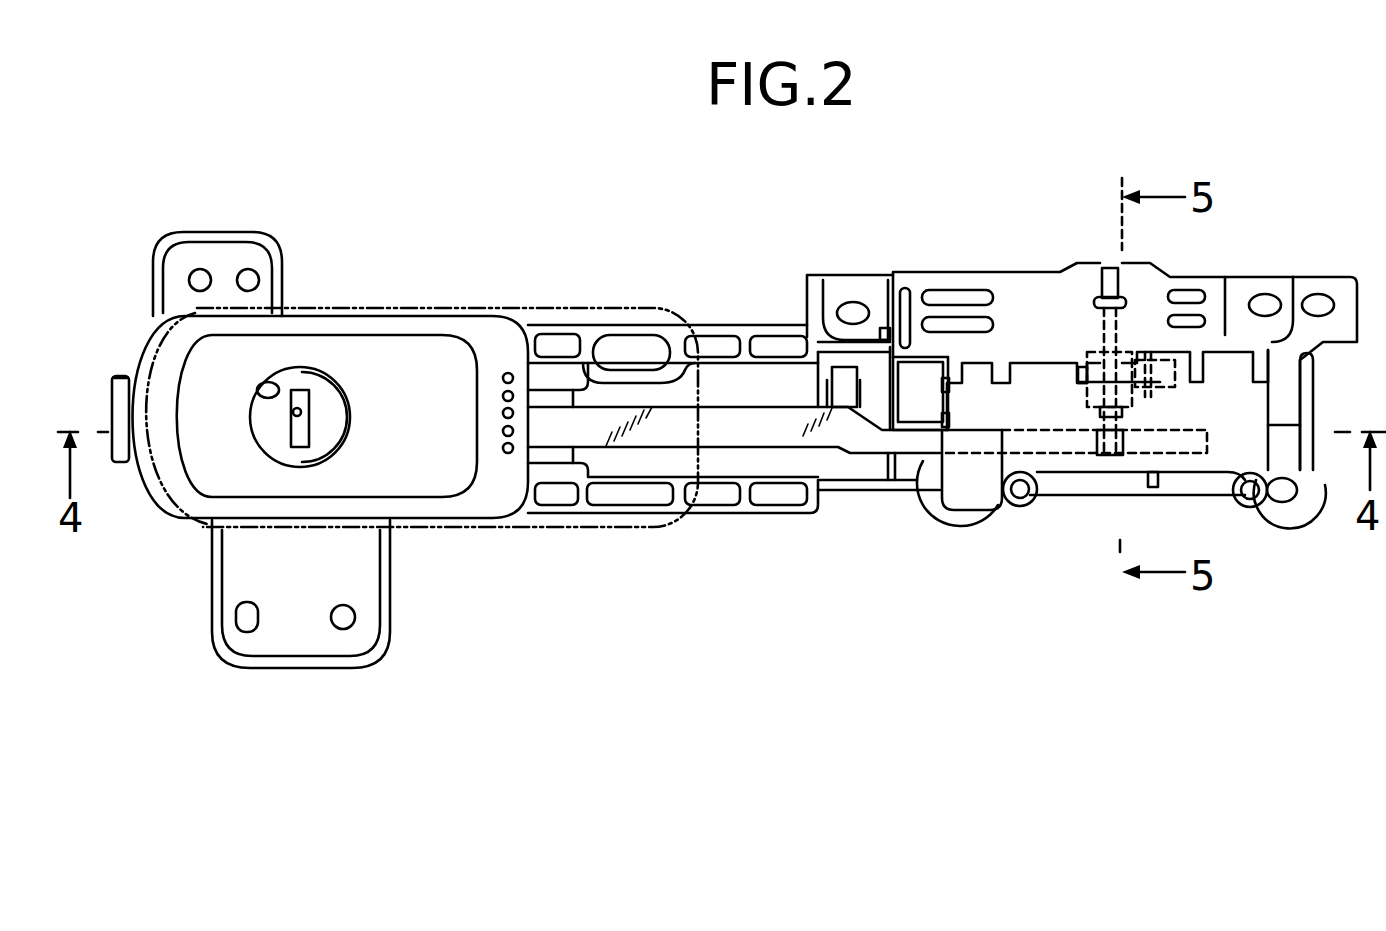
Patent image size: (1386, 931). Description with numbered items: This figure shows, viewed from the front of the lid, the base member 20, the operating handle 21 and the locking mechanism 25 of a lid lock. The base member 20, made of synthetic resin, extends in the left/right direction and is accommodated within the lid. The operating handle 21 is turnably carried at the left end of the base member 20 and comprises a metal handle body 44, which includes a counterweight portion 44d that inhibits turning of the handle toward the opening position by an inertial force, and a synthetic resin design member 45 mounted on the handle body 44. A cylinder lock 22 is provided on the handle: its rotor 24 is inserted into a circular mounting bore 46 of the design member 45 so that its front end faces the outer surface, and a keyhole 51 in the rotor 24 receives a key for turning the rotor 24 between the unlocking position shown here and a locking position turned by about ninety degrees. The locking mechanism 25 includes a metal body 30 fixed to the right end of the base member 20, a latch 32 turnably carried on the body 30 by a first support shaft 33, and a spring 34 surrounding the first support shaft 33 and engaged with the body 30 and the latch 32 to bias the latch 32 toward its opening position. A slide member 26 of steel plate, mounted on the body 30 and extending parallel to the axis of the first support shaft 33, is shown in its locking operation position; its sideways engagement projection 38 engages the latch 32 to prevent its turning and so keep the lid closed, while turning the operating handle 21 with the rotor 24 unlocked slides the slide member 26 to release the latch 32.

The base member 20 is at (748, 324).
The operating handle 21 is at (448, 300).
The cylinder lock 22 is at (253, 458).
The rotor 24 is at (300, 372).
The locking mechanism 25 is at (1203, 262).
The slide member 26 is at (655, 425).
The body 30 is at (1013, 290).
The latch 32 is at (1108, 268).
The first support shaft 33 is at (1078, 372).
The spring 34 is at (1128, 332).
The engagement projection 38 is at (1090, 418).
The handle body 44 is at (123, 472).
The counterweight portion 44d is at (122, 380).
The design member 45 is at (397, 352).
The mounting bore 46 is at (262, 393).
The keyhole 51 is at (310, 420).